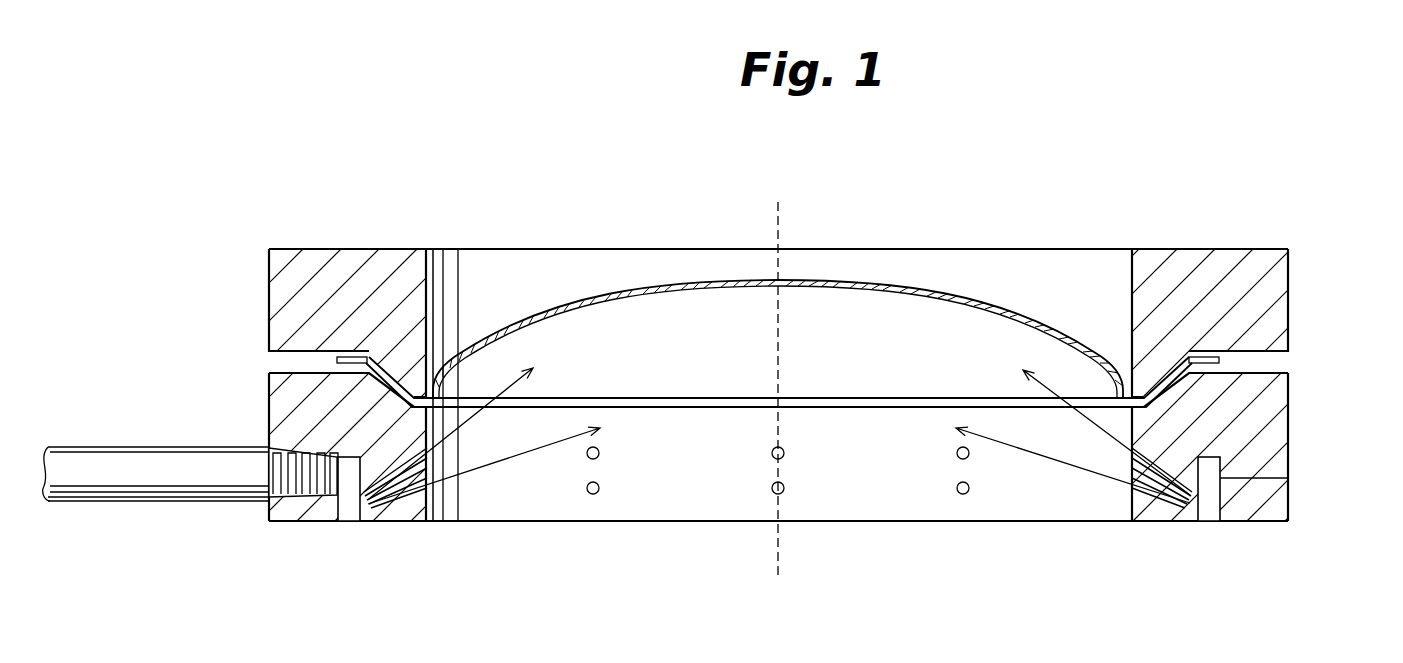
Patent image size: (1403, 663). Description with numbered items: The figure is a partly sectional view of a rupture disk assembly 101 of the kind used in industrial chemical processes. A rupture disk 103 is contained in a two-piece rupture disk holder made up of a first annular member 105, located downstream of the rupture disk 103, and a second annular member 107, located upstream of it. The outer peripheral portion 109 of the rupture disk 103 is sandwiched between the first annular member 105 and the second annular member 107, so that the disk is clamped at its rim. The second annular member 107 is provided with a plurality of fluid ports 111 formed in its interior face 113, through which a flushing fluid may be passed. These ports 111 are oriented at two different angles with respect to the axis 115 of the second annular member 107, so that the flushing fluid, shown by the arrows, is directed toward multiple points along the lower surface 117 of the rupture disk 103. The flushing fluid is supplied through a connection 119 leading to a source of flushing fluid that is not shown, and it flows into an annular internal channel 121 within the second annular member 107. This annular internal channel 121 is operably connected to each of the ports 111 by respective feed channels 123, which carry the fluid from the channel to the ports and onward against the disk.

The rupture disk assembly 101 is at (1032, 217).
The rupture disk 103 is at (850, 283).
The first annular member 105 is at (1252, 249).
The second annular member 107 is at (1292, 418).
The outer peripheral portion 109 is at (378, 355).
The fluid ports 111 is at (600, 453).
The interior face 113 is at (453, 522).
The axis 115 is at (778, 558).
The lower surface 117 is at (685, 292).
The connection 119 is at (157, 500).
The annular internal channel 121 is at (1293, 478).
The feed channels 123 is at (395, 522).